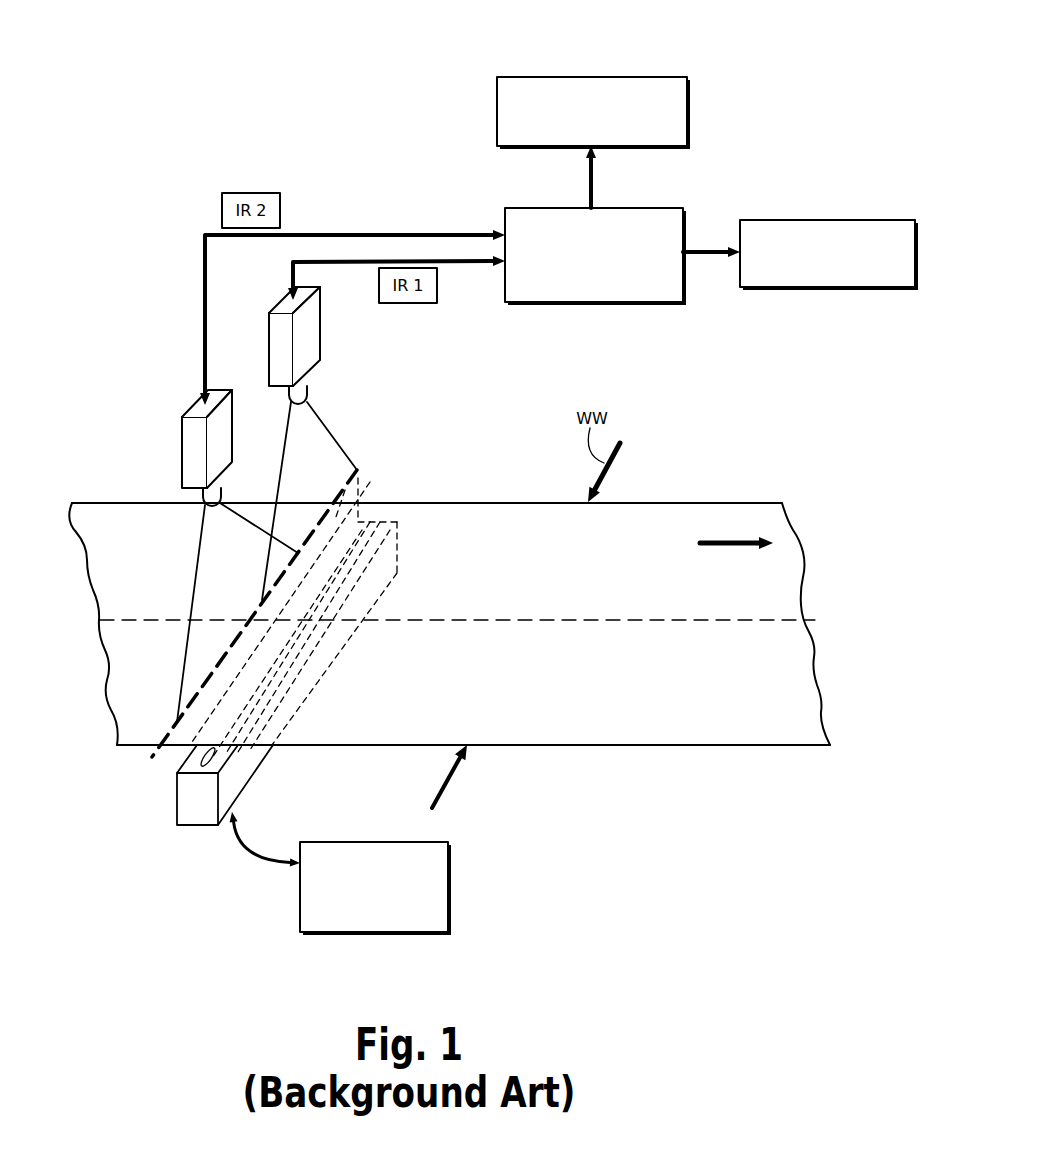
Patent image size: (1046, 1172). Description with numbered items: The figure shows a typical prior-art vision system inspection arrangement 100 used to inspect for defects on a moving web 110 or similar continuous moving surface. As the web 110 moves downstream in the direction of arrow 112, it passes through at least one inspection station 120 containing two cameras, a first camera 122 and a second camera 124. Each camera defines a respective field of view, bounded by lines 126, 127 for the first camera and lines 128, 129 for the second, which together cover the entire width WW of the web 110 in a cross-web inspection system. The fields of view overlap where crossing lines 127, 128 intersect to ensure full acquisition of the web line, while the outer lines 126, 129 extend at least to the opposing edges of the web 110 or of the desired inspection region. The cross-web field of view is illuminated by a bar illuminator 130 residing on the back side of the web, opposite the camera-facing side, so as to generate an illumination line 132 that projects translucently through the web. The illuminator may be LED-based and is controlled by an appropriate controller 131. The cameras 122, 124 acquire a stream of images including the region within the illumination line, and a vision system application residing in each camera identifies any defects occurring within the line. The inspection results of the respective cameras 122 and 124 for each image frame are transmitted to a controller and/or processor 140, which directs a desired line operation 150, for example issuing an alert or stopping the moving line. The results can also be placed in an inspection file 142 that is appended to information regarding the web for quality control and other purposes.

The vision system inspection arrangement 100 is at (780, 88).
The moving web 110 is at (737, 593).
The arrow 112 is at (712, 542).
The inspection station 120 is at (675, 422).
The Camera 1 122 is at (320, 363).
The Camera 2 124 is at (182, 447).
The outer line of field of view of Camera 1 126 is at (342, 442).
The crossing line of field of view of Camera 1 127 is at (262, 592).
The crossing line of field of view of Camera 2 128 is at (237, 507).
The outer line of field of view of Camera 2 129 is at (193, 607).
The bar illuminator 130 is at (198, 827).
The controller 131 is at (359, 920).
The illumination line 132 is at (152, 760).
The controller and/or processor 140 is at (579, 285).
The inspection file 142 is at (577, 134).
The line operation 150 is at (812, 276).